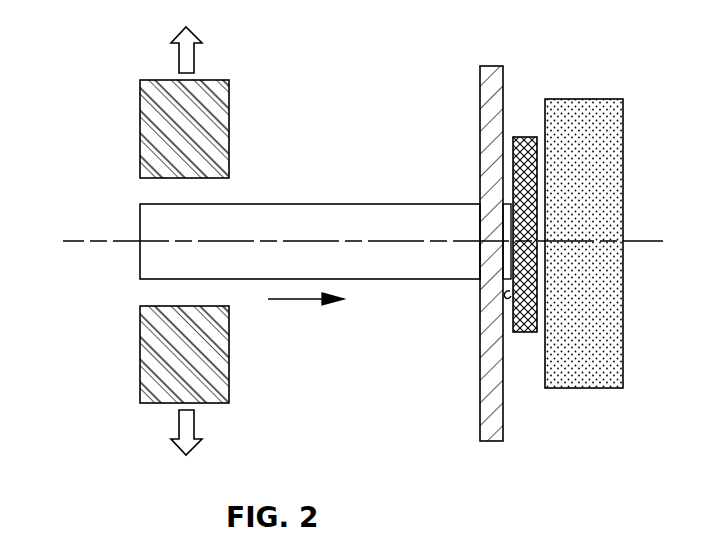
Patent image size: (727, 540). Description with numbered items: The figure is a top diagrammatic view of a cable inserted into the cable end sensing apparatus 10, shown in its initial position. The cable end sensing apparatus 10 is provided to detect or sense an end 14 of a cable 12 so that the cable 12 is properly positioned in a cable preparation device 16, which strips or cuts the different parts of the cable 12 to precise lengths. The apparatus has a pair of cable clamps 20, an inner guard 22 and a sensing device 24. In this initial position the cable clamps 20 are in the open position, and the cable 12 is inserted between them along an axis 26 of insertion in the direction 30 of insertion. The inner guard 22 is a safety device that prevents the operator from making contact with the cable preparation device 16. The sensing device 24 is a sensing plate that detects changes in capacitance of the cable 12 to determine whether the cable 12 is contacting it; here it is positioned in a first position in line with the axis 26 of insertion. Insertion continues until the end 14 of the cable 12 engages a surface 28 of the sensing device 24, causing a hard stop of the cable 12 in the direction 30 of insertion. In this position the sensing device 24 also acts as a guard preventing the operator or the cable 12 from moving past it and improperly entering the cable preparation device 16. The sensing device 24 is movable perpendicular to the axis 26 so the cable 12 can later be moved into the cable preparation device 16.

The cable end sensing apparatus 10 is at (352, 80).
The cable 12 is at (405, 270).
The end 14 is at (508, 232).
The cable preparation device 16 is at (620, 335).
The cable clamps 20 is at (152, 80).
The inner guard 22 is at (497, 72).
The sensing device 24 is at (527, 137).
The axis 26 is at (81, 241).
The surface 28 is at (510, 291).
The direction 30 is at (298, 299).